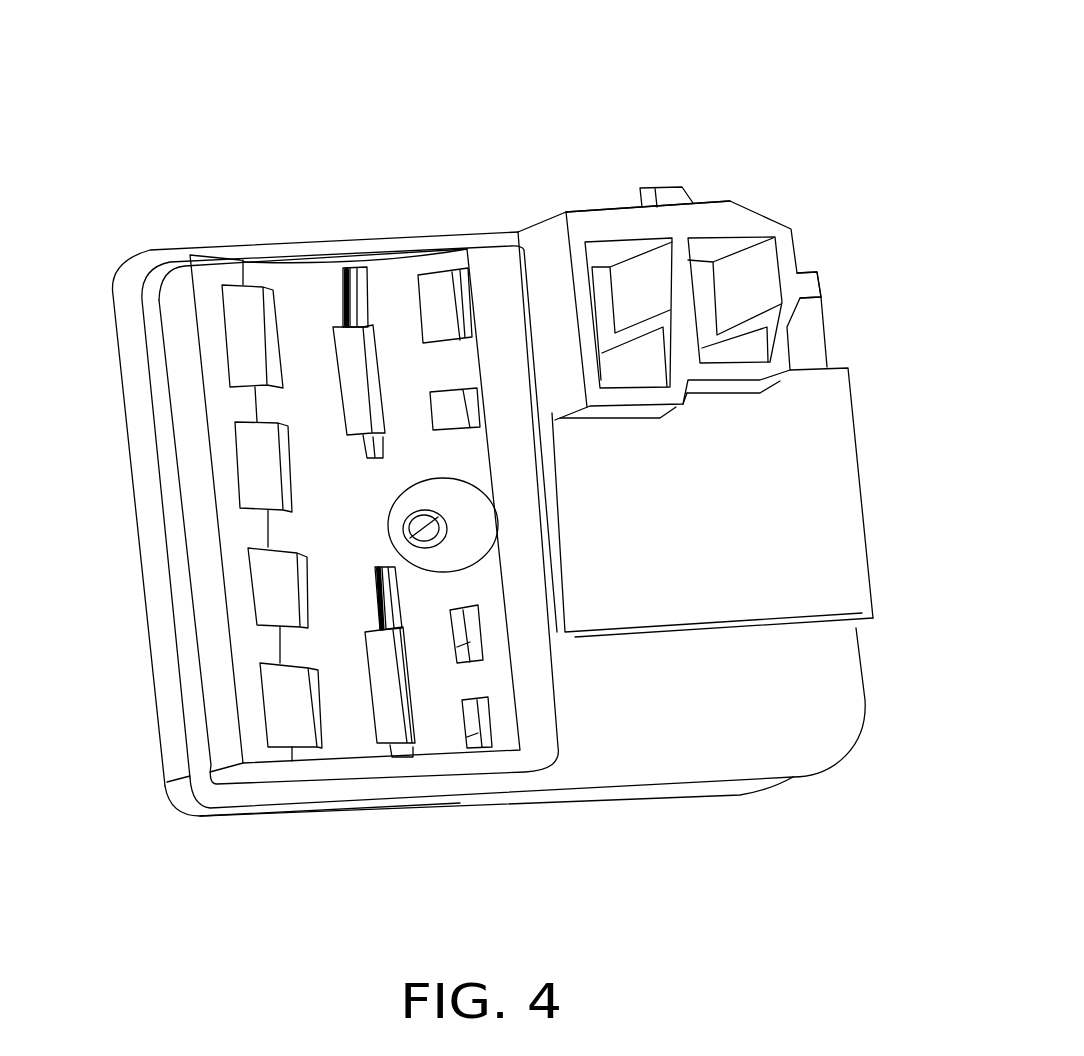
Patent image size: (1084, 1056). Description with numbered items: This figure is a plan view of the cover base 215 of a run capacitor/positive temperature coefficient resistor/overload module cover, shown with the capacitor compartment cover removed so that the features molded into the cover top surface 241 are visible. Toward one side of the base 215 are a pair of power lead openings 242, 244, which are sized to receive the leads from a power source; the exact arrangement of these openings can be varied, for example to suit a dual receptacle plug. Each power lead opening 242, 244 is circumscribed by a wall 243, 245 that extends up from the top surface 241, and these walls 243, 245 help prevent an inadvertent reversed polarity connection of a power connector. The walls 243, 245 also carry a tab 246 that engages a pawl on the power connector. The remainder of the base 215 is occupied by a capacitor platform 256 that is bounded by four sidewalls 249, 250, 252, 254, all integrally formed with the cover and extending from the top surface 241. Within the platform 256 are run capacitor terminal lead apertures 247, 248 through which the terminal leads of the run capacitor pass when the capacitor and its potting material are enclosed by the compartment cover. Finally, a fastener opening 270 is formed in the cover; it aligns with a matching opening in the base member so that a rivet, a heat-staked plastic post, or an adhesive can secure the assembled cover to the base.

The cover base 215 is at (738, 86).
The top surface 241 is at (827, 717).
The power lead opening 242 is at (614, 249).
The wall 243 is at (583, 220).
The power lead opening 244 is at (709, 244).
The wall 245 is at (790, 243).
The tab 246 is at (664, 186).
The run capacitor terminal lead aperture 247 is at (396, 710).
The run capacitor terminal lead aperture 248 is at (362, 394).
The sidewall 249 is at (200, 528).
The sidewall 250 is at (281, 236).
The sidewall 252 is at (560, 696).
The sidewall 254 is at (342, 772).
The capacitor platform 256 is at (248, 647).
The fastener opening 270 is at (408, 520).